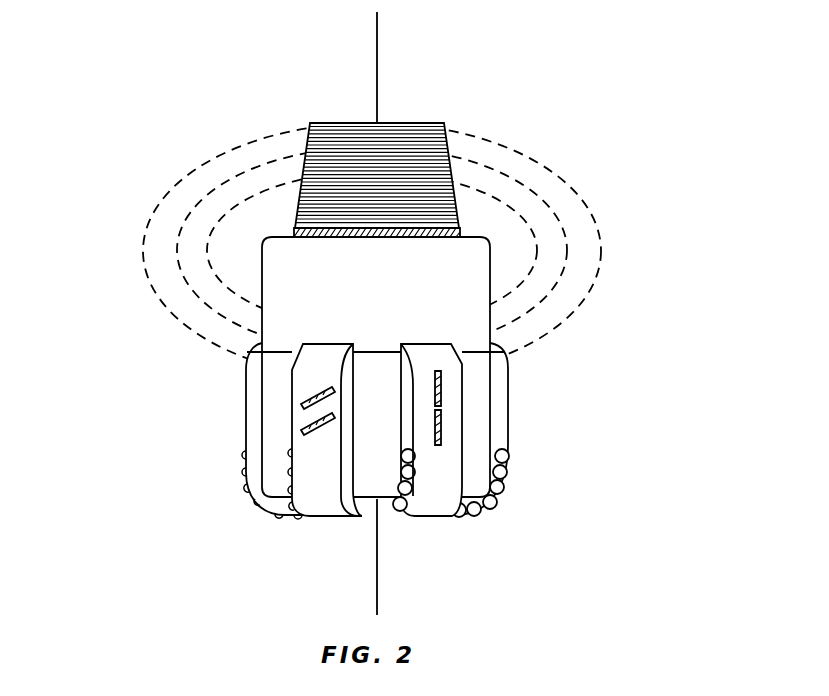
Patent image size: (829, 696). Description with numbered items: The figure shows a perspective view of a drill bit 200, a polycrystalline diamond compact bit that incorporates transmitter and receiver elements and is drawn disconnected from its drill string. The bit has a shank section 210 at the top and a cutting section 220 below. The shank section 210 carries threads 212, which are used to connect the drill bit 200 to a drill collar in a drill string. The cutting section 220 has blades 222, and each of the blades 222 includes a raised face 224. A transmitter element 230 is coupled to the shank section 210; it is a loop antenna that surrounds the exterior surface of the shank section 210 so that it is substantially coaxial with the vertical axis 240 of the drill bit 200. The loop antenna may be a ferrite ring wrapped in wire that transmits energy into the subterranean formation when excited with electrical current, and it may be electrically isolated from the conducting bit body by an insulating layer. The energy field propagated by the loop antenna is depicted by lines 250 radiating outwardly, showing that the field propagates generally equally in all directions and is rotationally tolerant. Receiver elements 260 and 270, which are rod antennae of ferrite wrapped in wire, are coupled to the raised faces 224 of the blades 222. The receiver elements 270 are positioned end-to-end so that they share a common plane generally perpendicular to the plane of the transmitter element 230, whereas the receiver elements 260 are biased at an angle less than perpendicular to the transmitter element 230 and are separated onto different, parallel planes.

The drill bit 200 is at (395, 313).
The shank section 210 is at (417, 164).
The threads 212 is at (449, 160).
The cutting section 220 is at (447, 408).
The blades 222 is at (393, 434).
The raised face 224 is at (411, 385).
The transmitter element 230 is at (291, 232).
The vertical axis 240 is at (381, 68).
The lines 250 is at (238, 127).
The receiver elements 260 is at (301, 412).
The receiver elements 270 is at (528, 408).